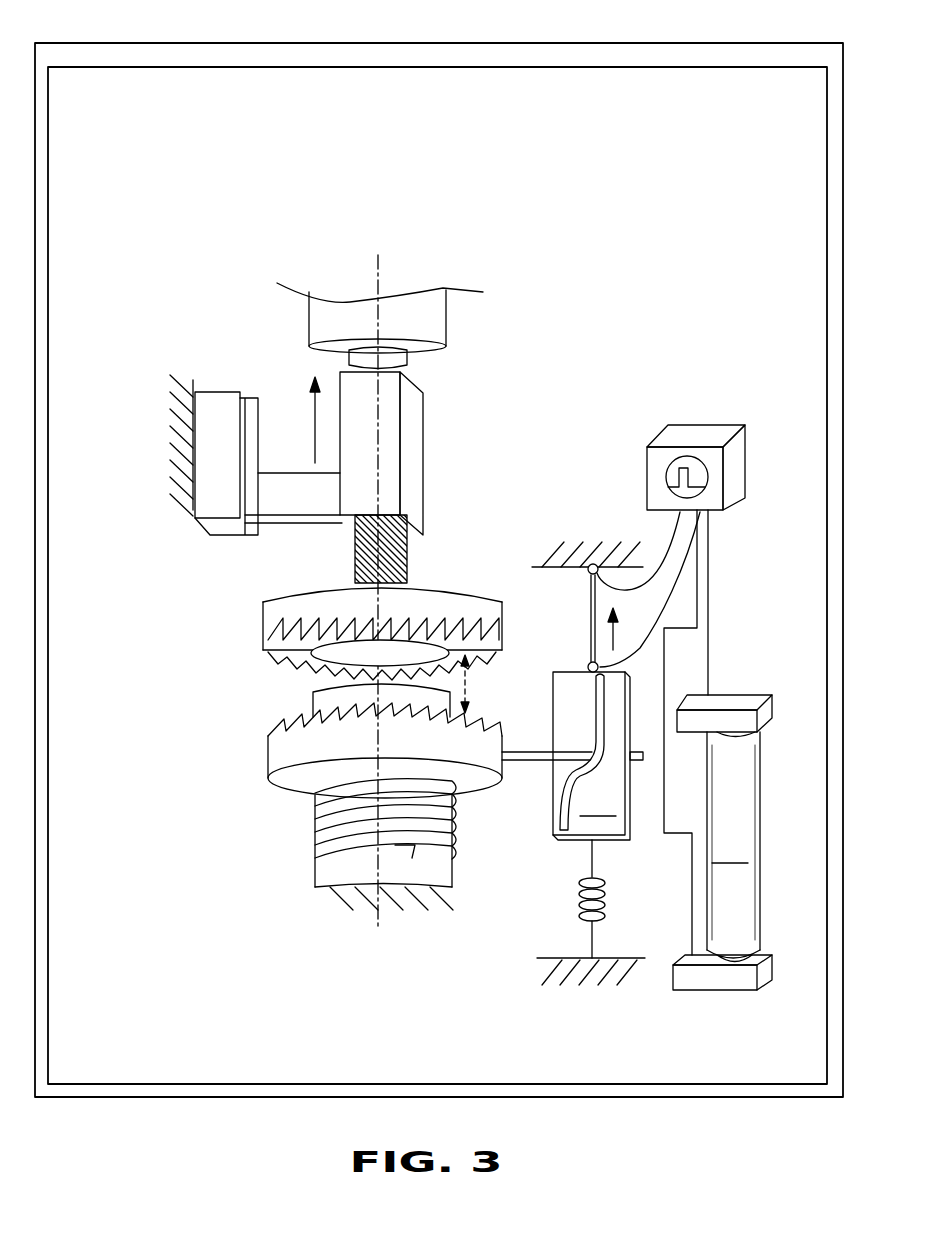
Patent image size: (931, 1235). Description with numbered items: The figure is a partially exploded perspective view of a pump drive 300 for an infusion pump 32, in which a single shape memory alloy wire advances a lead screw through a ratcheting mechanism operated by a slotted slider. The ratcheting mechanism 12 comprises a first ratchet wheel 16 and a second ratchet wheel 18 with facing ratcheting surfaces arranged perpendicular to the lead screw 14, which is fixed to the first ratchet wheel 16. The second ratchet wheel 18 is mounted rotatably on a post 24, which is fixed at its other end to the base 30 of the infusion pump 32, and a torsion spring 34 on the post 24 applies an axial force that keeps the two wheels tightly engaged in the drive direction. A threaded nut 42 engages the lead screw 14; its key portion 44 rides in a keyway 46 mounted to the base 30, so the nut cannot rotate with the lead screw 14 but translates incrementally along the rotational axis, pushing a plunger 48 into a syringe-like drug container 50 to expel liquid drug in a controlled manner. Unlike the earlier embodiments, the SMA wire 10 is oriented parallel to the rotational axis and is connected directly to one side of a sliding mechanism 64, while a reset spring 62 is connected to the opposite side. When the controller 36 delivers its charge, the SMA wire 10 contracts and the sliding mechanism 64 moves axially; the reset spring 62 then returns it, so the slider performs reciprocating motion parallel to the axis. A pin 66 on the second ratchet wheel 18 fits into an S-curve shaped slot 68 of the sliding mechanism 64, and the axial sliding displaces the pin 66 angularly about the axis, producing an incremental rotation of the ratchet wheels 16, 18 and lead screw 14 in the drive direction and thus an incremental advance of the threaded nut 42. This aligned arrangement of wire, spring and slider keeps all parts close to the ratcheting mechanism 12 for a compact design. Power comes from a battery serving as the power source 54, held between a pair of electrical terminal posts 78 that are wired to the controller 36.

The SMA wire 10 is at (593, 615).
The ratcheting mechanism 12 is at (326, 617).
The lead screw 14 is at (407, 543).
The first ratchet wheel 16 is at (262, 630).
The second ratchet wheel 18 is at (265, 758).
The post 24 is at (392, 855).
The base 30 is at (78, 1059).
The infusion pump 32 is at (208, 43).
The torsion spring 34 is at (294, 893).
The controller 36 is at (697, 425).
The threaded nut 42 is at (423, 493).
The key portion 44 is at (283, 487).
The keyway 46 is at (212, 403).
The plunger 48 is at (407, 363).
The drug container 50 is at (438, 318).
The power source 54 is at (712, 736).
The reset spring 62 is at (587, 937).
The sliding mechanism 64 is at (563, 755).
The pin 66 is at (540, 760).
The S-curve shaped slot 68 is at (600, 720).
The electrical terminal posts 78 is at (748, 698).
The pump drive 300 is at (182, 216).